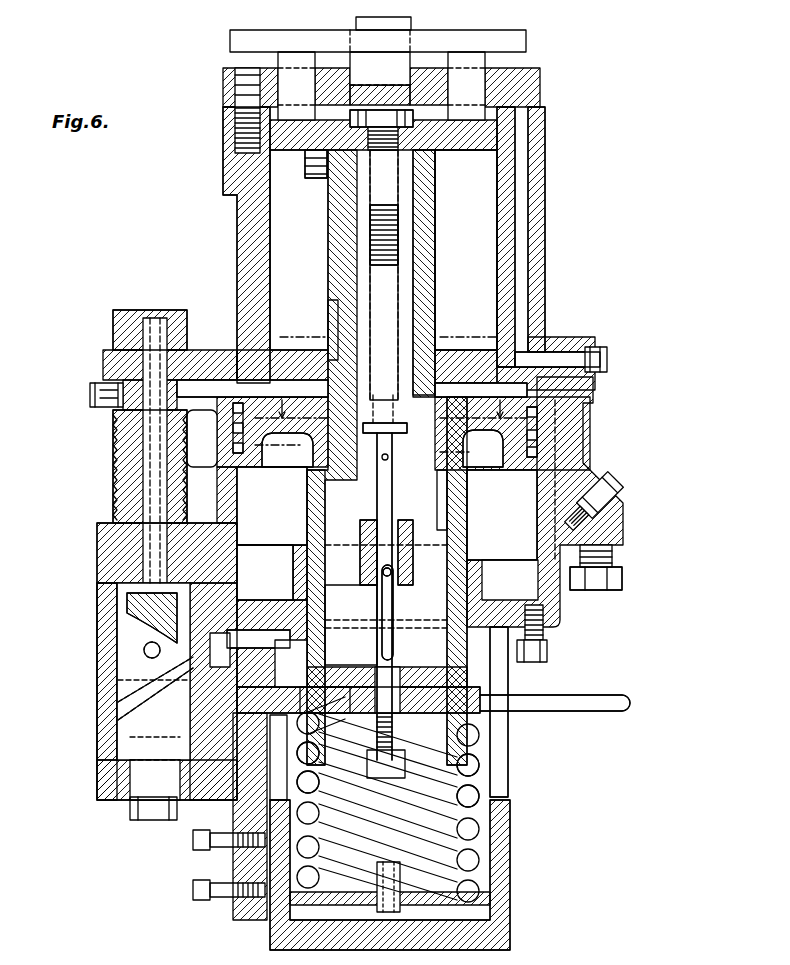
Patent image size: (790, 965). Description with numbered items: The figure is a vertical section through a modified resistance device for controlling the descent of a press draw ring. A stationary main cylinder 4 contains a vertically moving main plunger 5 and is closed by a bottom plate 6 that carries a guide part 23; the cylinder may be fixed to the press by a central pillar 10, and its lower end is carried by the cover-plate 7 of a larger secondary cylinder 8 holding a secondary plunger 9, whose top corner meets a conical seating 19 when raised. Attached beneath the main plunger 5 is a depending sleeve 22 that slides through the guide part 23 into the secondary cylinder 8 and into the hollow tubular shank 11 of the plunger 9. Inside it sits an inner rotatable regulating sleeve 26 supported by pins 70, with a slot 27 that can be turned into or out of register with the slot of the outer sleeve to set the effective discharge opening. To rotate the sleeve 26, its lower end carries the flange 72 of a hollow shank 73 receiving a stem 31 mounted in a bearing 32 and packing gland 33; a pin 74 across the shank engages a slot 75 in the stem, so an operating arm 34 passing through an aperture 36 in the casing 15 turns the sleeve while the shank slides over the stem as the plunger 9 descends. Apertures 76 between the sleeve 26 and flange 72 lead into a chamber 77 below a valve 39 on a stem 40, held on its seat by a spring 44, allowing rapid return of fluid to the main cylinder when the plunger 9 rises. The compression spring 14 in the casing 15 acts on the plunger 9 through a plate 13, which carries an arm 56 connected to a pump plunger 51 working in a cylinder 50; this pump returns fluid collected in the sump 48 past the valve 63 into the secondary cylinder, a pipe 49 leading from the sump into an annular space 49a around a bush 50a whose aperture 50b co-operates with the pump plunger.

The conical seating 19 is at (510, 52).
The main plunger 5 is at (515, 178).
The depending sleeve 22 is at (530, 255).
The inner rotatable regulating sleeve 26 is at (430, 235).
The spring 44 is at (360, 222).
The slot 27 is at (370, 258).
The stem 40 is at (384, 290).
The pins 70 is at (325, 340).
The central pillar 10 is at (383, 250).
The guide part 23 is at (445, 345).
The bottom plate 6 is at (520, 345).
The main cylinder 4 is at (240, 262).
The valve 63 is at (108, 360).
The cover-plate 7 is at (352, 398).
The secondary plunger 9 is at (203, 464).
The secondary cylinder 8 is at (203, 487).
The apertures 76 is at (347, 460).
The tubular shank 11 is at (302, 512).
The flange 72 is at (322, 515).
The valve 39 is at (393, 475).
The chamber 77 is at (462, 510).
The pipe 49 is at (262, 640).
The hollow shank 73 is at (362, 556).
The slot 75 is at (380, 600).
The pin 74 is at (392, 578).
The stem 31 is at (377, 639).
The packing gland 33 is at (375, 680).
The bearing 32 is at (410, 675).
The sump 48 is at (560, 595).
The operating arm 34 is at (610, 698).
The aperture 36 is at (508, 730).
The spring 14 is at (480, 773).
The plate 13 is at (320, 740).
The casing 15 is at (505, 845).
The aperture 50b is at (130, 608).
The cylinder 50 is at (100, 645).
The pump plunger 51 is at (130, 662).
The bush 50a is at (175, 660).
The annular space 49a is at (110, 715).
The arm 56 is at (240, 705).